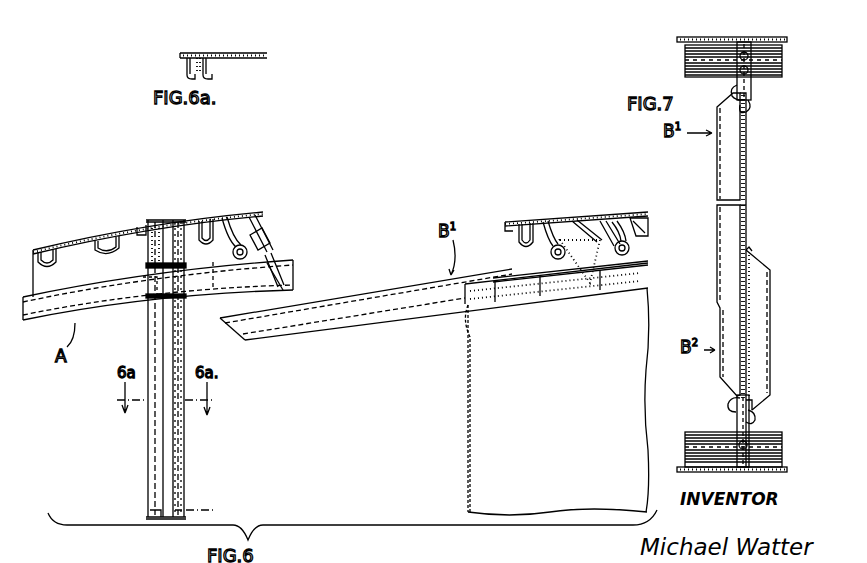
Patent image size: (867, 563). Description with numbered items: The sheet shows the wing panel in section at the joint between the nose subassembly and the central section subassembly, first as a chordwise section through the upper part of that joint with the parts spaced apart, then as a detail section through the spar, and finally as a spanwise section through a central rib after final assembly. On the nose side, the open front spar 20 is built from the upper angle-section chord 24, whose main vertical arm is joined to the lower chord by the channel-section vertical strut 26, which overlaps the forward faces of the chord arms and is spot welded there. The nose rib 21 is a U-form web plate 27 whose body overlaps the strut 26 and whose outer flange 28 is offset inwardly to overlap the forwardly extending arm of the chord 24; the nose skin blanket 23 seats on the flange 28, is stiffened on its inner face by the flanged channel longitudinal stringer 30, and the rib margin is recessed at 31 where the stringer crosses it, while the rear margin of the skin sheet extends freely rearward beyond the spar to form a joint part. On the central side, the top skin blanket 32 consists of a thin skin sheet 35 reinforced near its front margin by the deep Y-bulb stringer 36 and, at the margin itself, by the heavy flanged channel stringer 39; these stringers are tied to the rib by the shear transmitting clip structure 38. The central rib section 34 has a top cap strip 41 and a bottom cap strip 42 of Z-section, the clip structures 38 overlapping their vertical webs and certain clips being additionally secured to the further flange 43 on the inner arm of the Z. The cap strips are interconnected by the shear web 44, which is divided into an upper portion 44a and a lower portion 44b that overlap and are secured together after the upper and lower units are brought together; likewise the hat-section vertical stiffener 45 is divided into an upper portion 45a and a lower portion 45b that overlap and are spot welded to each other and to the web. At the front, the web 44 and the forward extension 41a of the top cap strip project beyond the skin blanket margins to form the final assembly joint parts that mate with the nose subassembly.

In FIG. 6, the front spar 20 is at (191, 453).
In FIG. 6, the nose rib 21 is at (62, 247).
In FIG. 6, the nose skin blanket 23 is at (66, 247).
In FIG. 6, the upper spar chord 24 is at (175, 221).
In FIG. 6, the vertical strut 26 is at (181, 343).
In FIG. 6a, the vertical strut 26 is at (213, 72).
In FIG. 6, the web plate 27 is at (85, 255).
In FIG. 6, the outer flange 28 is at (157, 221).
In FIG. 6, the longitudinal stringer 30 is at (105, 243).
In FIG. 6, the recess 31 is at (142, 233).
In FIG. 6, the top skin blanket 32 is at (258, 210).
In FIG. 6, the central rib section 34 is at (460, 415).
In FIG. 7, the central rib section 34 is at (753, 187).
In FIG. 6, the skin sheet 35 is at (218, 220).
In FIG. 7, the skin sheet 35 is at (725, 38).
In FIG. 6, the heavy stringer 36 is at (583, 260).
In FIG. 7, the heavy stringer 36 is at (692, 60).
In FIG. 6, the clip structure 38 is at (640, 227).
In FIG. 7, the clip structure 38 is at (752, 72).
In FIG. 6, the flanged channel section stringer 39 is at (203, 221).
In FIG. 6, the top cap strip 41 is at (545, 268).
In FIG. 7, the top cap strip 41 is at (746, 113).
In FIG. 6, the forward extension of top cap strip 41a is at (390, 281).
In FIG. 7, the bottom cap strip 42 is at (750, 420).
In FIG. 7, the flange 43 is at (750, 107).
In FIG. 6, the shear web 44 is at (488, 366).
In FIG. 6a, the shear web 44 is at (250, 53).
In FIG. 7, the shear web 44 is at (744, 223).
In FIG. 7, the upper web portion 44a is at (742, 162).
In FIG. 7, the lower web portion 44b is at (744, 371).
In FIG. 7, the vertical stiffener 45 is at (722, 174).
In FIG. 7, the upper stiffener portion 45a is at (722, 246).
In FIG. 7, the lower stiffener portion 45b is at (762, 268).